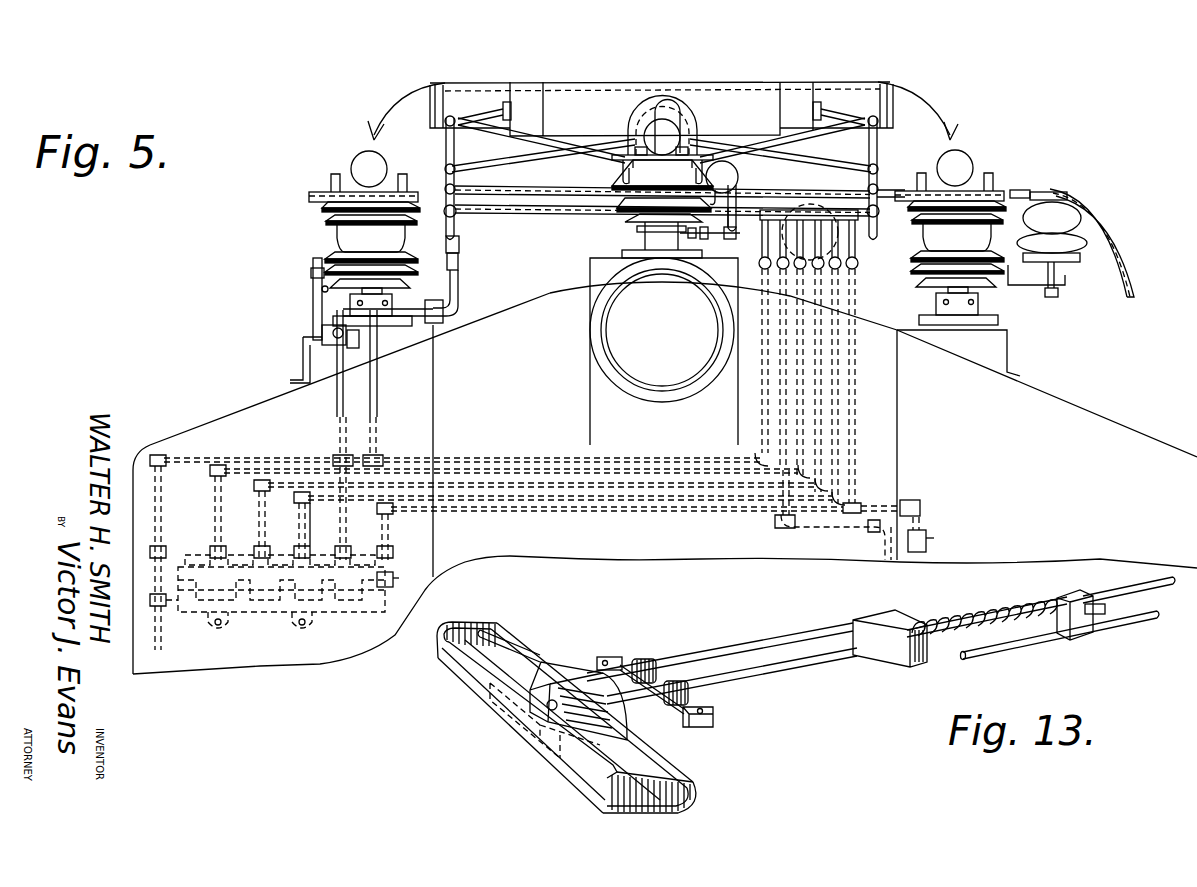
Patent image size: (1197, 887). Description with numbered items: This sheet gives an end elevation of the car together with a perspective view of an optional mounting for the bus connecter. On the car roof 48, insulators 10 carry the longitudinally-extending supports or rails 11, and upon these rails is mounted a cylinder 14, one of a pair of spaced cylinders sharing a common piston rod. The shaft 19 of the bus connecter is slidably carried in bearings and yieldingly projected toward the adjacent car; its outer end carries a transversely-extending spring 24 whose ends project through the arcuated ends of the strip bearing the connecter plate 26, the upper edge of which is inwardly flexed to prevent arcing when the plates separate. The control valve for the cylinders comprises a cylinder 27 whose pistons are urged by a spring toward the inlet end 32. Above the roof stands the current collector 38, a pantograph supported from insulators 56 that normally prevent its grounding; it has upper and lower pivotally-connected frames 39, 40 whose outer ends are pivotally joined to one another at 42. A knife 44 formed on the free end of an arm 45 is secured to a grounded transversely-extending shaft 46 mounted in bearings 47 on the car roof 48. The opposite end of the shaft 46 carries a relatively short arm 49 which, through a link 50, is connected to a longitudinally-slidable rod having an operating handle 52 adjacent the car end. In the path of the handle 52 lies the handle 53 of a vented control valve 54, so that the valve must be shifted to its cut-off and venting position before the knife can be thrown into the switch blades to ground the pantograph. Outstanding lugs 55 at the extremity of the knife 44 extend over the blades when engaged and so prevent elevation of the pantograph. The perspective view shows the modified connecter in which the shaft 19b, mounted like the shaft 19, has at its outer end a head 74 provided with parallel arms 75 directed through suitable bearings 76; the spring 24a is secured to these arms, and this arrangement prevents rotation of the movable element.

In FIG. 5, the insulators 10 is at (676, 182).
In FIG. 5, the rails 11 is at (620, 163).
In FIG. 5, the cylinder 14 is at (637, 129).
In FIG. 5, the shaft 19 is at (692, 114).
In FIG. 5, the spring 24 is at (500, 108).
In FIG. 5, the connecter plate 26 is at (690, 80).
In FIG. 13, the connecter plate 26 is at (520, 727).
In FIG. 5, the cylinder 27 is at (726, 165).
In FIG. 5, the inlet end 32 is at (755, 186).
In FIG. 5, the current collector 38 is at (447, 83).
In FIG. 5, the upper frame 39 is at (530, 153).
In FIG. 5, the lower frame 40 is at (608, 210).
In FIG. 5, the pivotal connection 42 is at (457, 171).
In FIG. 5, the knife 44 is at (460, 256).
In FIG. 5, the arm 45 is at (460, 282).
In FIG. 5, the shaft 46 is at (412, 308).
In FIG. 5, the bearings 47 is at (436, 316).
In FIG. 5, the car roof 48 is at (258, 397).
In FIG. 5, the short arm 49 is at (322, 292).
In FIG. 5, the link 50 is at (313, 262).
In FIG. 5, the operating handle 52 is at (311, 280).
In FIG. 5, the handle 53 is at (320, 328).
In FIG. 5, the control valve 54 is at (318, 368).
In FIG. 5, the lugs 55 is at (460, 238).
In FIG. 5, the insulators 56 is at (384, 246).
In FIG. 13, the spring 24a is at (513, 650).
In FIG. 13, the head 74 is at (877, 622).
In FIG. 13, the parallel arms 75 is at (720, 666).
In FIG. 13, the bearings 76 is at (713, 724).
In FIG. 13, the shaft 19b is at (1107, 583).